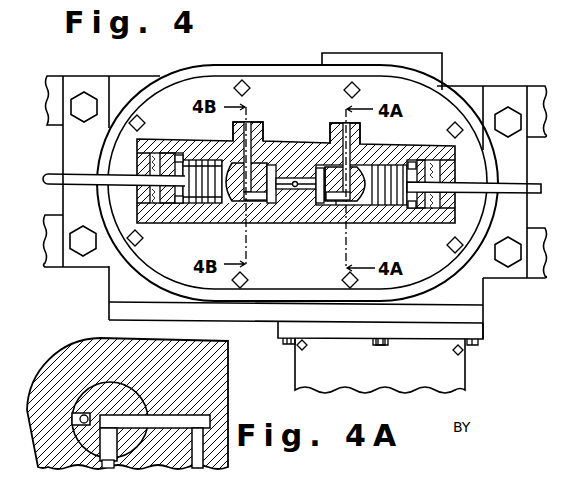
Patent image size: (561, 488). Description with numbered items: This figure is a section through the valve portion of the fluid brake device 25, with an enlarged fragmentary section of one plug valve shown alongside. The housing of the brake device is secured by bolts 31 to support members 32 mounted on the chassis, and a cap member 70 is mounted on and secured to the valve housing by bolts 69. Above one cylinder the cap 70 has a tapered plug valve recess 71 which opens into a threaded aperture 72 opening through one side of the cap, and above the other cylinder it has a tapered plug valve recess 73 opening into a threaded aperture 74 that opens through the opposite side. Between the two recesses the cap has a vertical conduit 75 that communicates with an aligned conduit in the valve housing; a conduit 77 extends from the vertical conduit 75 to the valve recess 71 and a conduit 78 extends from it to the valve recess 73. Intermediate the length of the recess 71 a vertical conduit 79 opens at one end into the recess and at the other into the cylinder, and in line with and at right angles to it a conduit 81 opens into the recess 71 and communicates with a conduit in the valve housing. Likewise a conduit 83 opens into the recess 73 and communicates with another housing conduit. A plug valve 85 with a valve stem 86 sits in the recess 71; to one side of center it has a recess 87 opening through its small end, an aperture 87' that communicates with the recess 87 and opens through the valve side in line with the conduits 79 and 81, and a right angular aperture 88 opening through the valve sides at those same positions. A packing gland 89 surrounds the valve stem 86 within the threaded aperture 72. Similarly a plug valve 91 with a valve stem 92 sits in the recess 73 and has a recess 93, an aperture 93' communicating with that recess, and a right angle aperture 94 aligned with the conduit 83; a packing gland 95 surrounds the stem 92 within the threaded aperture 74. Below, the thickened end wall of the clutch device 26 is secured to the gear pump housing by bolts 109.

In FIG. 4, the fluid brake device 25 is at (245, 64).
In FIG. 4, the clutch device 26 is at (289, 372).
In FIG. 4, the bolts 31 is at (81, 98).
In FIG. 4, the support members 32 is at (47, 126).
In FIG. 4, the bolts 69 is at (360, 90).
In FIG. 4, the cap member 70 is at (434, 98).
In FIG. 4A, the cap member 70 is at (221, 348).
In FIG. 4, the tapered plug valve recess 71 is at (350, 208).
In FIG. 4A, the tapered plug valve recess 71 is at (143, 397).
In FIG. 4, the threaded aperture 72 is at (425, 163).
In FIG. 4, the tapered plug valve recess 73 is at (233, 205).
In FIG. 4, the threaded aperture 74 is at (152, 157).
In FIG. 4, the vertical conduit 75 is at (295, 182).
In FIG. 4, the conduit 77 is at (320, 205).
In FIG. 4, the conduit 78 is at (273, 205).
In FIG. 4A, the vertical conduit 79 is at (105, 464).
In FIG. 4, the conduit 81 is at (360, 143).
In FIG. 4A, the conduit 81 is at (182, 420).
In FIG. 4, the conduit 83 is at (242, 143).
In FIG. 4, the plug valve 85 is at (367, 200).
In FIG. 4A, the plug valve 85 is at (107, 392).
In FIG. 4, the valve stem 86 is at (541, 188).
In FIG. 4, the recess 87 is at (330, 206).
In FIG. 4A, the recess 87 is at (68, 375).
In FIG. 4, the aperture 87' is at (329, 230).
In FIG. 4A, the aperture 87' is at (56, 382).
In FIG. 4, the right angular aperture 88 is at (343, 172).
In FIG. 4A, the right angular aperture 88 is at (132, 415).
In FIG. 4, the packing gland 89 is at (456, 170).
In FIG. 4, the plug valve 91 is at (216, 207).
In FIG. 4, the valve stem 92 is at (49, 175).
In FIG. 4, the recess 93 is at (229, 202).
In FIG. 4, the aperture 93' is at (232, 223).
In FIG. 4, the right angle aperture 94 is at (249, 172).
In FIG. 4, the packing gland 95 is at (137, 163).
In FIG. 4, the bolts 109 is at (378, 345).